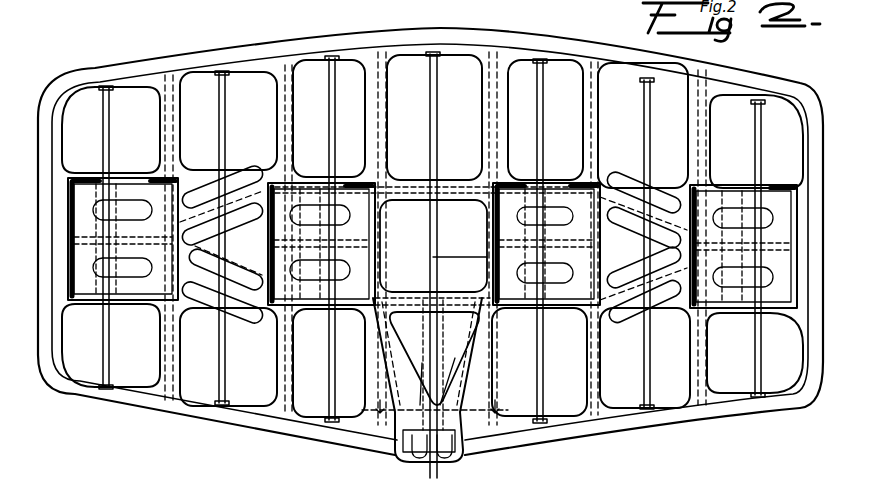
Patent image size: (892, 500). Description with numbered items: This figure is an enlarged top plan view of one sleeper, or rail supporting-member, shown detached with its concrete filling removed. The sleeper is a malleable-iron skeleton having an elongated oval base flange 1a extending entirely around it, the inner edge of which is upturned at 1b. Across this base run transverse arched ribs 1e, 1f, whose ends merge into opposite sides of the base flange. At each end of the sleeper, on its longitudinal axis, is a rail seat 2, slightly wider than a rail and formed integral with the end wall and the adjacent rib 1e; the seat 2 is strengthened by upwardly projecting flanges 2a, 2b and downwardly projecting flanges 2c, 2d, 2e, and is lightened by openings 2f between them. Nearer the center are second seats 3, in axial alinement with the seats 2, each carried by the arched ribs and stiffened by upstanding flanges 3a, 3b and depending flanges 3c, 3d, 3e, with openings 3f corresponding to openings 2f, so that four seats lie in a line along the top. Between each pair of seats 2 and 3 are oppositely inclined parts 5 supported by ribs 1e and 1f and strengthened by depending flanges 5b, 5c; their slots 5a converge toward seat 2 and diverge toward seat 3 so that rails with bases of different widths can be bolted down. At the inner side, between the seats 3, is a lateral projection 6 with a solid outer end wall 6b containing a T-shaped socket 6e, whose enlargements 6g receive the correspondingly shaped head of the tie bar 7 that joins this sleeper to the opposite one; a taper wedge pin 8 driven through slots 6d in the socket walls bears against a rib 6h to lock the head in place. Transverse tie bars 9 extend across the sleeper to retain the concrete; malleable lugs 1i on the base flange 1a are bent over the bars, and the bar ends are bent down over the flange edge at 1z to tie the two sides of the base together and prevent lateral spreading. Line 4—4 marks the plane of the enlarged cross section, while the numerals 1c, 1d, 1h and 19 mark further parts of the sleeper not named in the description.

The base flange 1a is at (140, 65).
The upturned inner edge of base flange 1b is at (665, 473).
The frame opening 1c is at (240, 360).
The frame opening 1d is at (270, 415).
The transverse arched rib 1e is at (187, 92).
The transverse arched rib 1f is at (332, 55).
The frame corner opening 1h is at (800, 352).
The malleable lugs 1i is at (520, 60).
The bent-down ends of tie bars 1z is at (217, 410).
The center line 19 is at (385, 58).
The seat 2 is at (800, 290).
The upwardly projecting flange 2a is at (118, 185).
The upwardly projecting flange 2b is at (700, 240).
The downwardly projecting flange 2c is at (125, 235).
The downwardly projecting flange 2d is at (722, 180).
The downwardly projecting flange 2e is at (760, 330).
The openings 2f is at (120, 205).
The second seat 3 is at (487, 266).
The upstanding flange 3a is at (410, 224).
The upstanding flange 3b is at (385, 262).
The depending strengthening flange 3c is at (345, 330).
The depending strengthening flange 3d is at (330, 231).
The depending strengthening flange 3e is at (395, 250).
The openings 3f is at (378, 222).
The section line 4 is at (440, 13).
The oppositely inclined parts 5 is at (431, 245).
The slots 5a is at (265, 168).
The depending flange 5b is at (665, 225).
The depending flange 5c is at (240, 160).
The lateral projection 6 is at (222, 175).
The solid outer end wall 6b is at (421, 376).
The slots 6d is at (435, 462).
The T-shaped socket 6e is at (448, 462).
The enlargements 6g is at (455, 465).
The rib 6h is at (450, 368).
The tie bar 7 is at (556, 170).
The taper wedge pin 8 is at (433, 407).
The transverse tie bars 9 is at (600, 72).